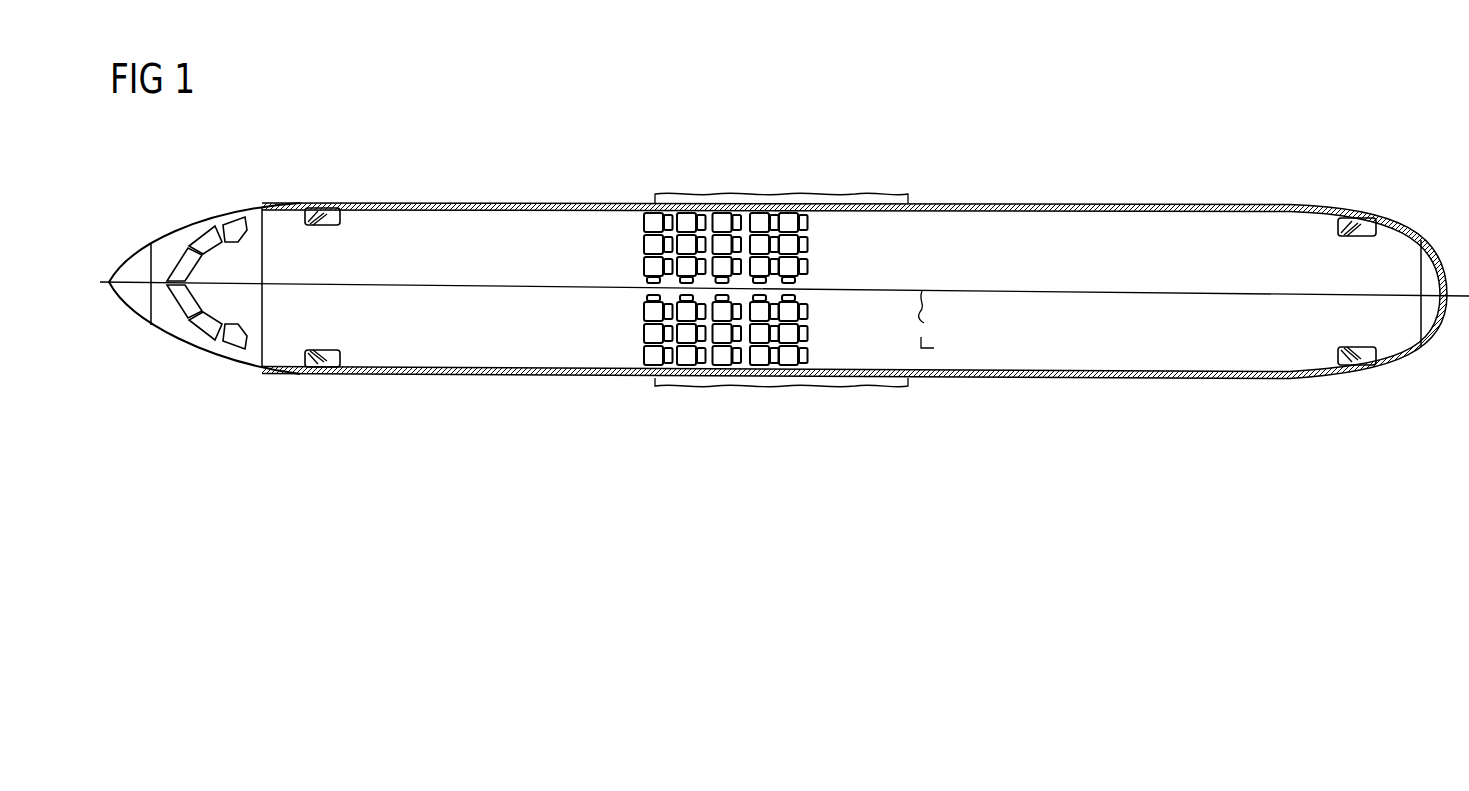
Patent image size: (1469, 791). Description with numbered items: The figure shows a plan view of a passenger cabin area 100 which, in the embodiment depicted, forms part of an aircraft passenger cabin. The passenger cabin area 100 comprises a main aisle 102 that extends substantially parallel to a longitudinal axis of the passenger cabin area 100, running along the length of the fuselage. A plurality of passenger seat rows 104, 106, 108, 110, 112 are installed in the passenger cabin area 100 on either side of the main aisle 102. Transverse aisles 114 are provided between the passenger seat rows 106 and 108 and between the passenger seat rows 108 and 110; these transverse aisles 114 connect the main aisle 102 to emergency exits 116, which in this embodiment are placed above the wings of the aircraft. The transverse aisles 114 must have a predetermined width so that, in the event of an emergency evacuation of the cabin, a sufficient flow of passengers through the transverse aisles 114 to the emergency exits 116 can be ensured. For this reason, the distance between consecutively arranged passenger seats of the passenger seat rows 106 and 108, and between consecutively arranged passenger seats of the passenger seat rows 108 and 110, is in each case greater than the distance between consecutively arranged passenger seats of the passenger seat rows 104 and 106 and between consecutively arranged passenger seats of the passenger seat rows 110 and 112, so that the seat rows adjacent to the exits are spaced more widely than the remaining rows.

The passenger cabin area 100 is at (784, 131).
The main aisle 102 is at (652, 288).
The passenger seat row 104 is at (655, 222).
The passenger seat row 106 is at (680, 360).
The passenger seat row 108 is at (722, 200).
The passenger seat row 110 is at (760, 358).
The passenger seat row 112 is at (790, 222).
The transverse aisles 114 is at (780, 350).
The emergency exits 116 is at (722, 203).